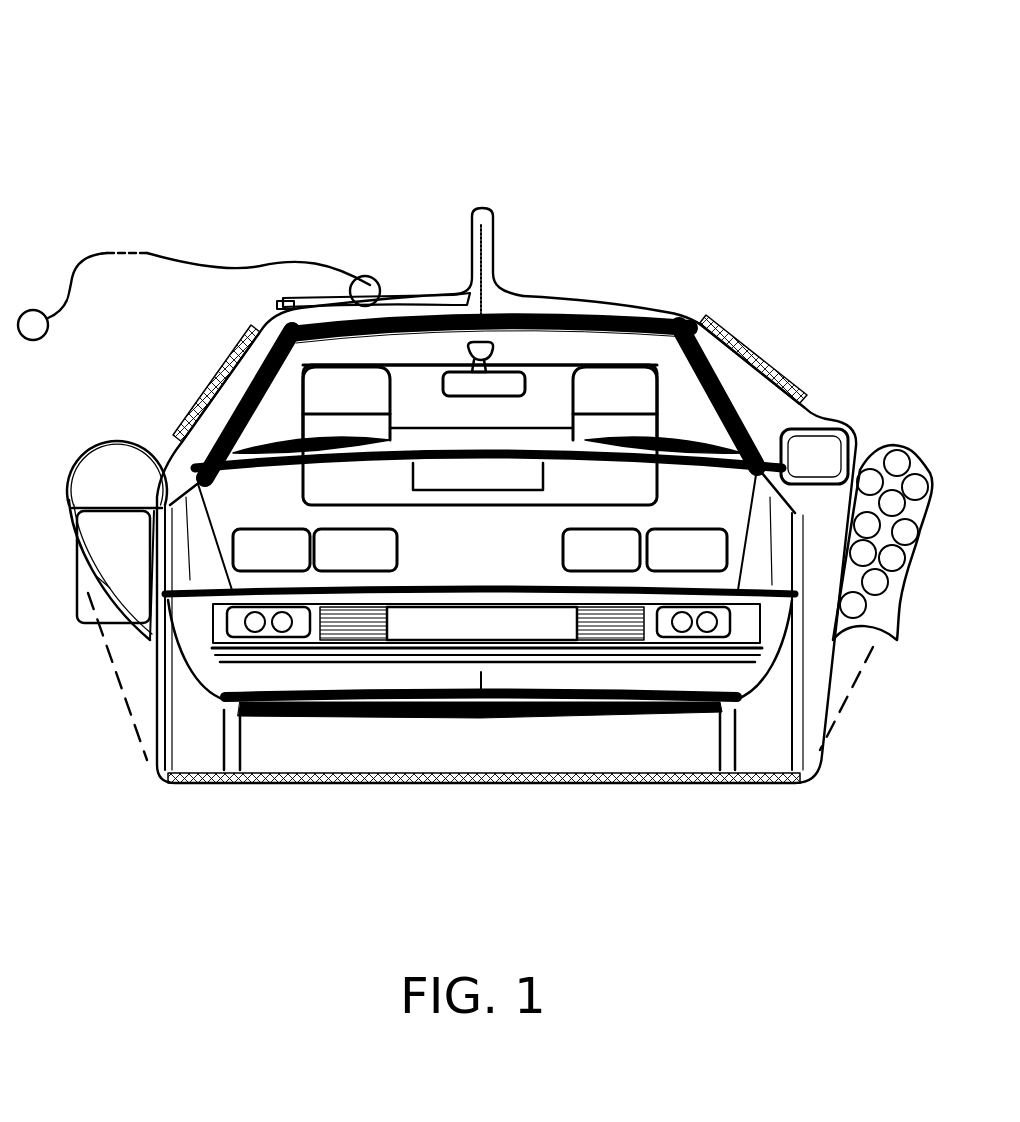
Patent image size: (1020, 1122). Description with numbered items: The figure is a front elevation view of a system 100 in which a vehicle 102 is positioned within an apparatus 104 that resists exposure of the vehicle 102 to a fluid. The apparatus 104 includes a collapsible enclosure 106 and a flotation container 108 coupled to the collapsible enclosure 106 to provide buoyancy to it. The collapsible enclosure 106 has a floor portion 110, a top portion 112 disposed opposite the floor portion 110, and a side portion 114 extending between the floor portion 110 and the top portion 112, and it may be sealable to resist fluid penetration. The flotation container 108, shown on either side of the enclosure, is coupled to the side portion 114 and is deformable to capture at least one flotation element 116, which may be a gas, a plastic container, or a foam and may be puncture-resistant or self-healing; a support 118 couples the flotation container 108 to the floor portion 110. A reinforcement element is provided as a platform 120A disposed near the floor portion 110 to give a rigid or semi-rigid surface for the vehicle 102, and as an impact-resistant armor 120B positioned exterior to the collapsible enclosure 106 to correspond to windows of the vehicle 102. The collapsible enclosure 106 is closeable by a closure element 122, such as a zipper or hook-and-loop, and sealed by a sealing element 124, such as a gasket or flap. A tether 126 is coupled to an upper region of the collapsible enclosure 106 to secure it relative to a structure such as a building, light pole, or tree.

The system 100 is at (185, 58).
The vehicle 102 is at (570, 312).
The apparatus 104 is at (760, 282).
The collapsible enclosure 106 is at (650, 312).
The flotation container 108 is at (118, 440).
The floor portion 110 is at (680, 785).
The top portion 112 is at (438, 290).
The side portion 114 is at (834, 658).
The flotation element 116 is at (100, 568).
The support 118 is at (117, 682).
The platform 120A is at (300, 784).
The impact-resistant armor 120B is at (205, 392).
The closure element 122 is at (326, 290).
The sealing element 124 is at (283, 300).
The tether 126 is at (180, 253).